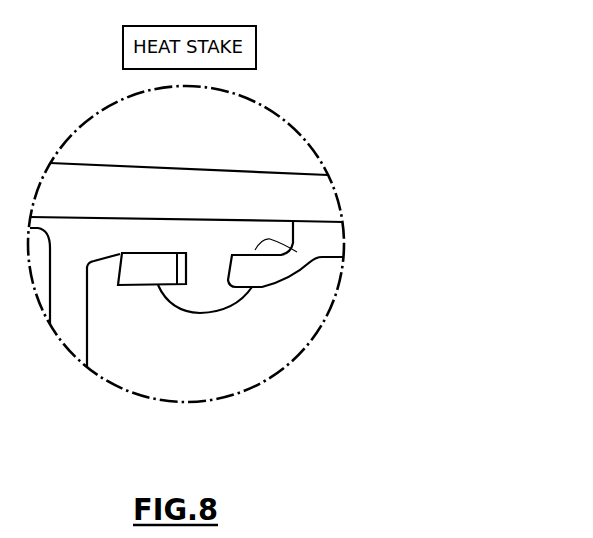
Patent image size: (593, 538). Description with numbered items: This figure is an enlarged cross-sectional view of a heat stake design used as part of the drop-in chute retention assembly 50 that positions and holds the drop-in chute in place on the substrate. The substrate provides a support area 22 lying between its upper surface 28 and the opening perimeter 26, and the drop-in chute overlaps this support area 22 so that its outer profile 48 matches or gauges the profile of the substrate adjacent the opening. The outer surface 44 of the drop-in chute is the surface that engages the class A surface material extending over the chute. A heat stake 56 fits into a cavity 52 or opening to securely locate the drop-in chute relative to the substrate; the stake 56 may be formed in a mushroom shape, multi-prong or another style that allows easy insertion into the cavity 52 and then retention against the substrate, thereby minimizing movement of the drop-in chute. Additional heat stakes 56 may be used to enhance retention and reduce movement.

The support area 22 is at (278, 289).
The opening perimeter 26 is at (294, 220).
The upper surface 28 is at (330, 221).
The outer surface 44 is at (186, 221).
The outer profile 48 is at (297, 252).
The retention assembly 50 is at (365, 345).
The cavity 52 is at (177, 268).
The heat stake 56 is at (207, 318).